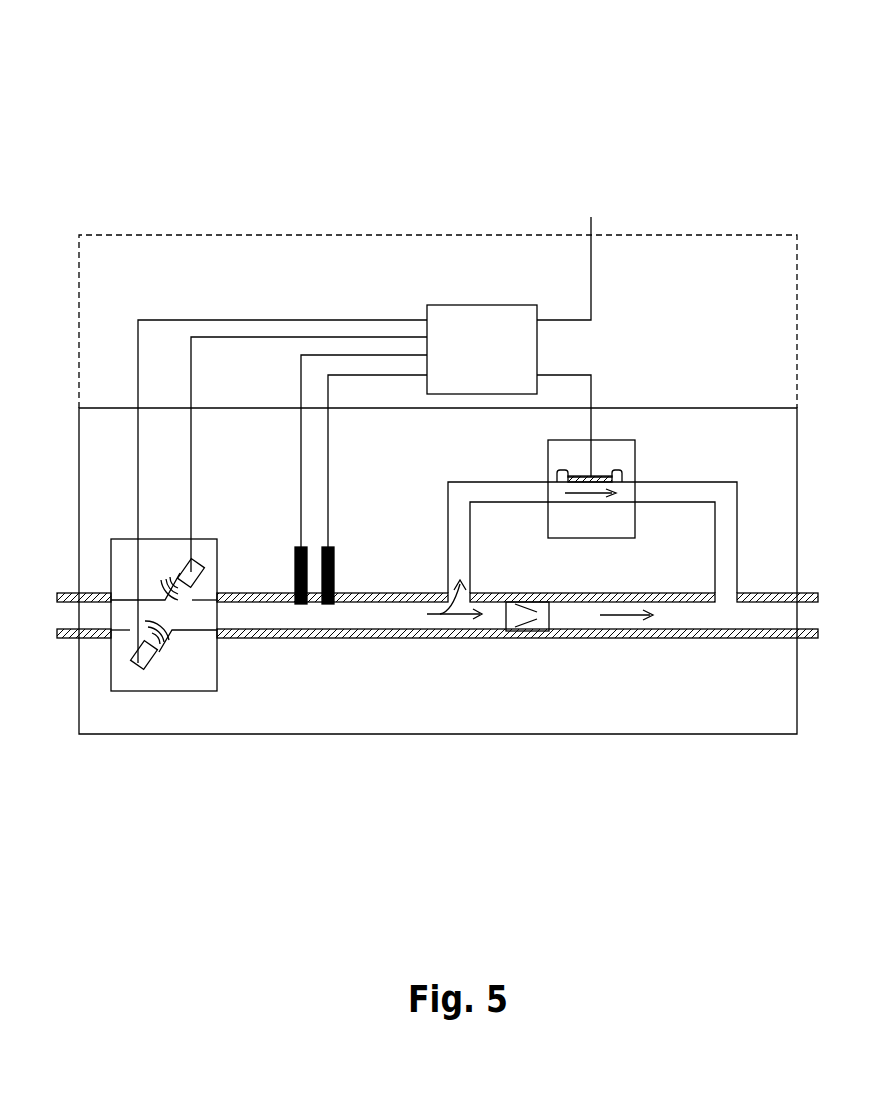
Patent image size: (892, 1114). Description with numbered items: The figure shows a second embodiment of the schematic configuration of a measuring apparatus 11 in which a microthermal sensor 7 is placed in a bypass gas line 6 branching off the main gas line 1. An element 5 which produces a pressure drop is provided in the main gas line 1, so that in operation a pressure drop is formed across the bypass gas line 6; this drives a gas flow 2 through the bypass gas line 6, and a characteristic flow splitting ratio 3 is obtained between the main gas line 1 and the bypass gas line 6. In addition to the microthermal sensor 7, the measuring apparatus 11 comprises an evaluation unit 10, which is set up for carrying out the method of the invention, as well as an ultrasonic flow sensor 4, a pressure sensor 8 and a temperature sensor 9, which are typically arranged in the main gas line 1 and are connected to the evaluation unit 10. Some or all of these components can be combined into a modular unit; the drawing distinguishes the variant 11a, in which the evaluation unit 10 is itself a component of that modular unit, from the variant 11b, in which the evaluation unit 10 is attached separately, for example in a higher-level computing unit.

The main gas line 1 is at (569, 633).
The gas flow 2 is at (460, 506).
The flow splitting ratio 3 is at (460, 620).
The ultrasonic flow sensor 4 is at (187, 657).
The element which produces a pressure drop 5 is at (512, 633).
The bypass gas line 6 is at (465, 482).
The microthermal sensor 7 is at (617, 518).
The pressure sensor 8 is at (295, 560).
The temperature sensor 9 is at (333, 560).
The evaluation unit 10 is at (483, 323).
The measuring apparatus 11 is at (686, 99).
The variant in which the evaluation unit is a component of the modular unit 11a is at (709, 235).
The variant in which the evaluation unit is attached separately 11b is at (710, 408).